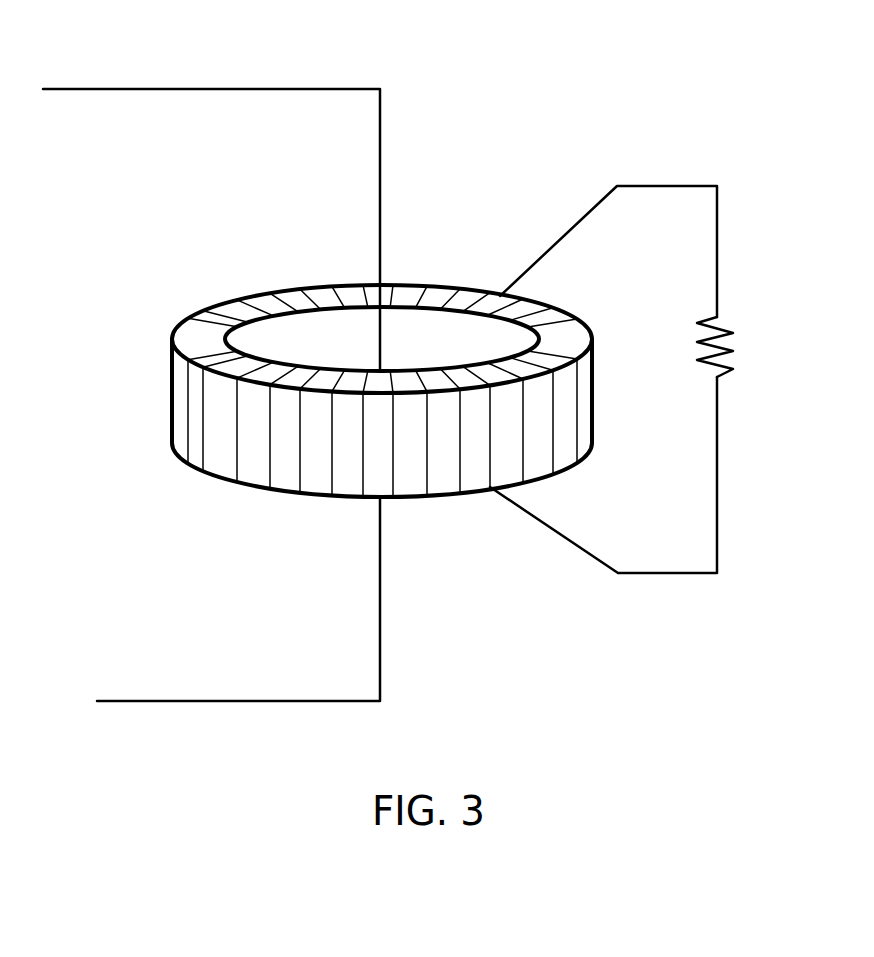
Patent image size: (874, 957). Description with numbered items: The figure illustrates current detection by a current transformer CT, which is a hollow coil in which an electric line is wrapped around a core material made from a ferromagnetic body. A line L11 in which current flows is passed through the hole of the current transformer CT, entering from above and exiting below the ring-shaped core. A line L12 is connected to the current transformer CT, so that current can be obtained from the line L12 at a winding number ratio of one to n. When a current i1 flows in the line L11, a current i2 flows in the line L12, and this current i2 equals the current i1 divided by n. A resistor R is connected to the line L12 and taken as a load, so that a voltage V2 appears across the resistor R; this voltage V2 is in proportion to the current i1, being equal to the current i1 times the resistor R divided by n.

The line L11 is at (64, 89).
The current i1 is at (412, 112).
The line L12 is at (578, 223).
The current i2 is at (615, 154).
The resistor R is at (700, 347).
The voltage V2 is at (775, 302).
The current transformer CT is at (450, 498).